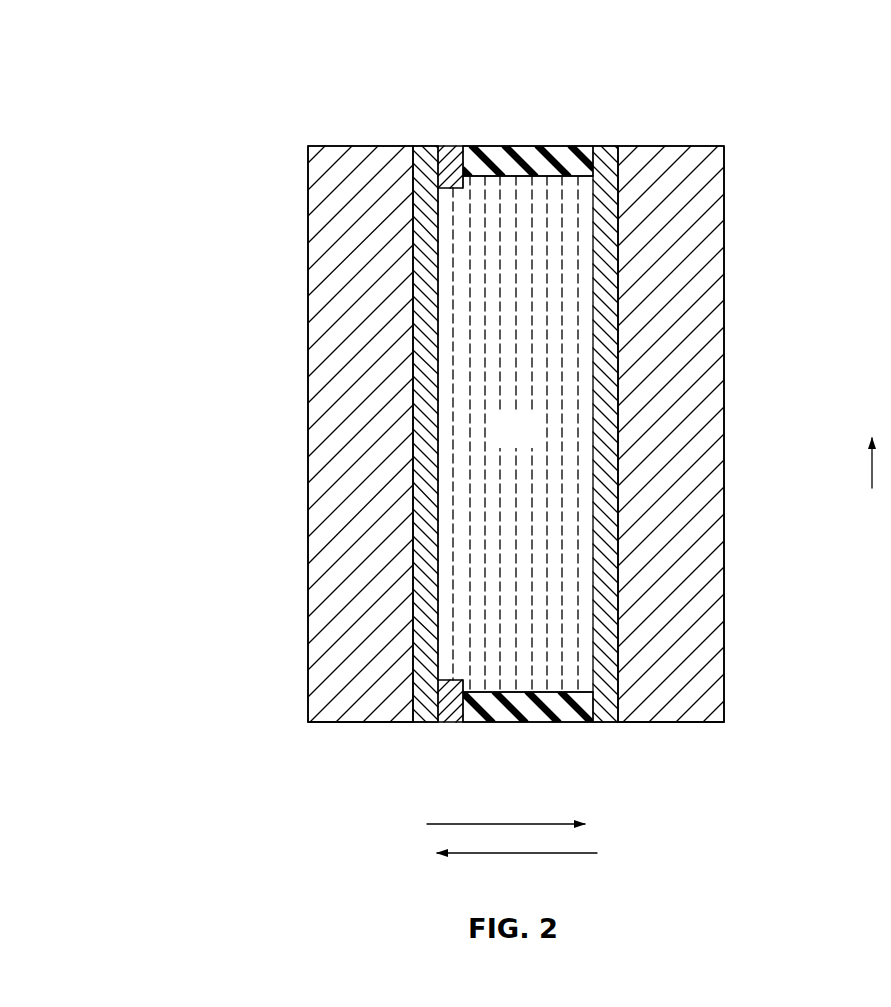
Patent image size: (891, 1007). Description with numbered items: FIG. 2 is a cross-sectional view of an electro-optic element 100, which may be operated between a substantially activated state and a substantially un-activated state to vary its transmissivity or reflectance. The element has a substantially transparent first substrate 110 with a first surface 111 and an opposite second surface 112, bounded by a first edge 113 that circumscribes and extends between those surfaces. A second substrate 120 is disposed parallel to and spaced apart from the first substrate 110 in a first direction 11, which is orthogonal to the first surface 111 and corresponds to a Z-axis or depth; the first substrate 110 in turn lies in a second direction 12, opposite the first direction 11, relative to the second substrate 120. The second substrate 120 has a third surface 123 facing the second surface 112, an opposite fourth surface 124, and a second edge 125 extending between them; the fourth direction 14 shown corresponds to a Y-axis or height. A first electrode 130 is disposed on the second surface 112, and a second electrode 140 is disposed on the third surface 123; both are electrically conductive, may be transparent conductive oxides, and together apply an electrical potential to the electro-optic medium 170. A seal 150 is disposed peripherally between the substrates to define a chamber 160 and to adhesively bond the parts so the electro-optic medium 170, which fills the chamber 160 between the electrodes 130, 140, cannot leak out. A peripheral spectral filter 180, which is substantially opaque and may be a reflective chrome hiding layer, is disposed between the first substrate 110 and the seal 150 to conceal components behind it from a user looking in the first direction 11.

The electro-optic element 100 is at (220, 98).
The first substrate 110 is at (352, 279).
The first surface 111 is at (308, 192).
The second surface 112 is at (412, 418).
The first edge 113 is at (338, 722).
The second substrate 120 is at (692, 273).
The third surface 123 is at (618, 417).
The fourth surface 124 is at (724, 193).
The second edge 125 is at (692, 722).
The first electrode 130 is at (427, 146).
The second electrode 140 is at (607, 146).
The seal 150 is at (538, 146).
The chamber 160 is at (534, 443).
The electro-optic medium 170 is at (528, 648).
The spectral filter 180 is at (447, 722).
The fourth direction 14 is at (867, 437).
The first direction 11 is at (526, 815).
The second direction 12 is at (496, 852).